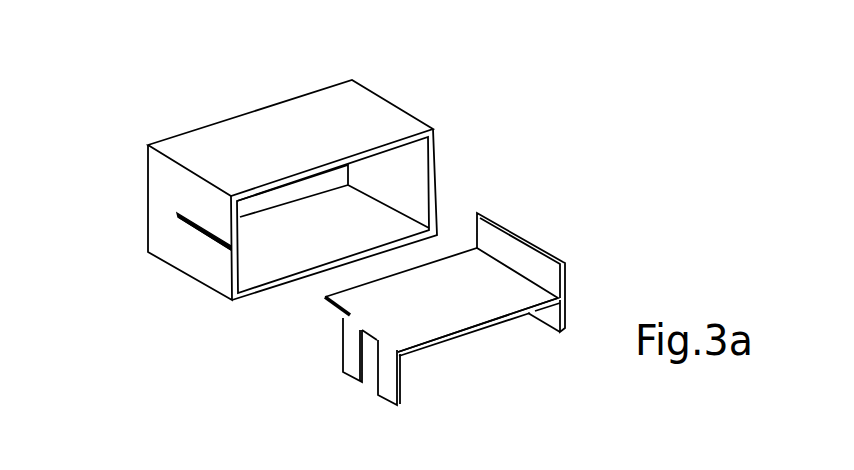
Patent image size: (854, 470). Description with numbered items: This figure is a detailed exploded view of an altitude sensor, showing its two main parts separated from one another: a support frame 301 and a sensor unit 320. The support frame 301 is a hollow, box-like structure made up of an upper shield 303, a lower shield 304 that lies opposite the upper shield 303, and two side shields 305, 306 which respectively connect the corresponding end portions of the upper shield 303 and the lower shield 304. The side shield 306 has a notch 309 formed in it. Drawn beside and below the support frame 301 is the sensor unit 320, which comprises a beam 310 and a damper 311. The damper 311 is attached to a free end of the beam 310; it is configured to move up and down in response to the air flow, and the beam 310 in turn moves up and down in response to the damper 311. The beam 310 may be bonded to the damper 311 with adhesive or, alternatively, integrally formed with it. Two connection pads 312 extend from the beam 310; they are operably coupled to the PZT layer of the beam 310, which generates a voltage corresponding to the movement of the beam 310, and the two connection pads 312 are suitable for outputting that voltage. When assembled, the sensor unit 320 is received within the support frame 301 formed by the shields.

The support frame 301 is at (415, 70).
The upper shield 303 is at (249, 157).
The lower shield 304 is at (281, 287).
The side shield 305 is at (432, 172).
The side shield 306 is at (173, 198).
The notch 309 is at (198, 233).
The beam 310 is at (387, 312).
The damper 311 is at (512, 257).
The connection pads 312 is at (385, 377).
The sensor unit 320 is at (533, 233).